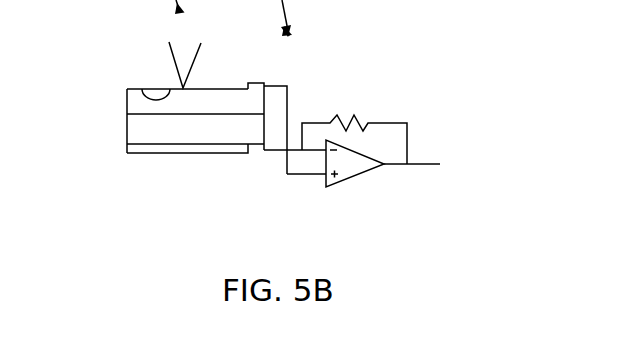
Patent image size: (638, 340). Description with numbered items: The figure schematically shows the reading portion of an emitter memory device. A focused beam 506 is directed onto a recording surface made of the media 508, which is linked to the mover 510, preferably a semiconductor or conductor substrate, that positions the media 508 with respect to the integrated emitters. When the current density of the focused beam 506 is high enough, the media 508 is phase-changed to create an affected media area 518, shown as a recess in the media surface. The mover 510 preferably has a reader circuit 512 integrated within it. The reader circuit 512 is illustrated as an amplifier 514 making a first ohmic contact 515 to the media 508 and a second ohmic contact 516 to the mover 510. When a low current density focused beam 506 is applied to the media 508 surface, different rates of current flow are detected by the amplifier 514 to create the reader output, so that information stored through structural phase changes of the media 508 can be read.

The focused beam 506 is at (160, 55).
The media 508 is at (127, 106).
The mover 510 is at (127, 129).
The reader circuit 512 is at (289, 73).
The amplifier 514 is at (357, 196).
The first ohmic contact 515 is at (248, 83).
The second ohmic contact 516 is at (247, 155).
The affected media area 518 is at (158, 88).